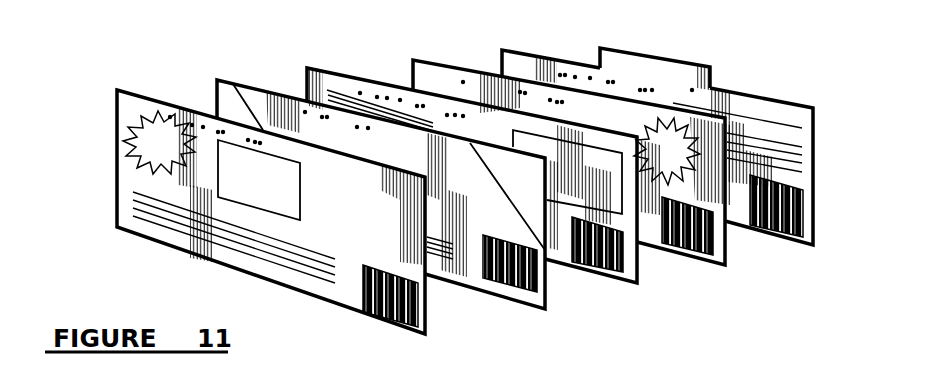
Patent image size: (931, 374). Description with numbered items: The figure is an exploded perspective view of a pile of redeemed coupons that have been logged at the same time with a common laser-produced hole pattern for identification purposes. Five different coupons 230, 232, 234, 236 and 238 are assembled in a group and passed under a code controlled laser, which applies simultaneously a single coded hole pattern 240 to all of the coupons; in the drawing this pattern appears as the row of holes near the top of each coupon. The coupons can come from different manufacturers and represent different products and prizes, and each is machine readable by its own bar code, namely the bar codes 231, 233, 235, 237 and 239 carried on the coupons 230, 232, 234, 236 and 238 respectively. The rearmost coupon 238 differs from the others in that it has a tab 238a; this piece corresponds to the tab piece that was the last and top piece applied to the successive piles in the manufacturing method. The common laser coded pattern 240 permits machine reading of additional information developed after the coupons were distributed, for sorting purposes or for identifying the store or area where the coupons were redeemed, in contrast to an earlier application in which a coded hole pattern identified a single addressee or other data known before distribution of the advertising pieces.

The coupon 230 is at (122, 116).
The bar code 231 is at (427, 315).
The coupon 232 is at (222, 98).
The bar code 233 is at (540, 289).
The coupon 234 is at (305, 72).
The bar code 235 is at (637, 264).
The coupon 236 is at (462, 66).
The bar code 237 is at (722, 244).
The coupon 238 is at (743, 92).
The tab 238a is at (657, 64).
The bar code 239 is at (803, 227).
The coded hole pattern 240 is at (387, 100).